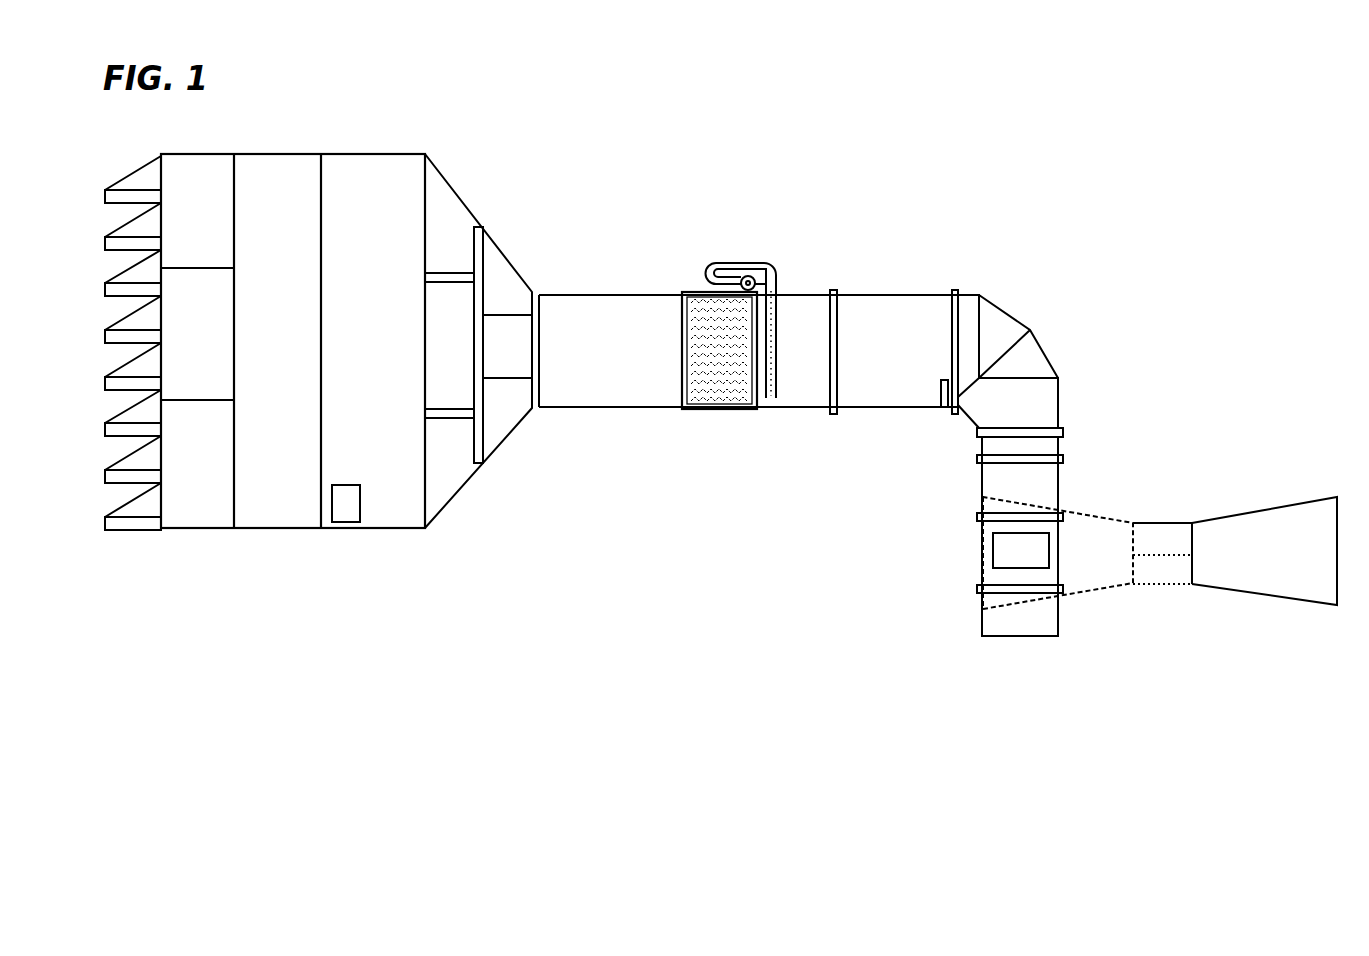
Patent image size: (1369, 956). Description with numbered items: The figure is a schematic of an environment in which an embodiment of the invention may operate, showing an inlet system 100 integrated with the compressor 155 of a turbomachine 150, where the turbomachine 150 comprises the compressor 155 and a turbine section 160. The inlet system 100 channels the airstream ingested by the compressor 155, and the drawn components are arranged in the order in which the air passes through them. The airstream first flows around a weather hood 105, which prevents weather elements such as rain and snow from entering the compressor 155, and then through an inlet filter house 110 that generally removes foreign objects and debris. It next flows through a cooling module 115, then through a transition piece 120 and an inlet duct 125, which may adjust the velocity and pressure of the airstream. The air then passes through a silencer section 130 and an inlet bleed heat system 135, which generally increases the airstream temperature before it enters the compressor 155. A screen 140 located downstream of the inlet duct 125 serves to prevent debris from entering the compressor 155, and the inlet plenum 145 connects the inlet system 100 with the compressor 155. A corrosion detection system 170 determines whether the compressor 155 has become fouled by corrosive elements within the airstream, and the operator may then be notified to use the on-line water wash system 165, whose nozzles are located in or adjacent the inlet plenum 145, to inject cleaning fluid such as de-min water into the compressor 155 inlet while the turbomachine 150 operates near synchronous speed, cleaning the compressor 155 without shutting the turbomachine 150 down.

The inlet system 100 is at (993, 237).
The weather hood 105 is at (104, 454).
The inlet filter house 110 is at (310, 368).
The cooling module 115 is at (347, 522).
The transition piece 120 is at (502, 467).
The inlet duct 125 is at (618, 379).
The silencer section 130 is at (710, 410).
The inlet bleed heat system 135 is at (775, 262).
The screen 140 is at (949, 420).
The inlet plenum 145 is at (1045, 493).
The turbomachine 150 is at (1165, 595).
The compressor 155 is at (1115, 567).
The turbine section 160 is at (1268, 563).
The on-line water wash system 165 is at (1021, 550).
The corrosion detection system 170 is at (527, 365).